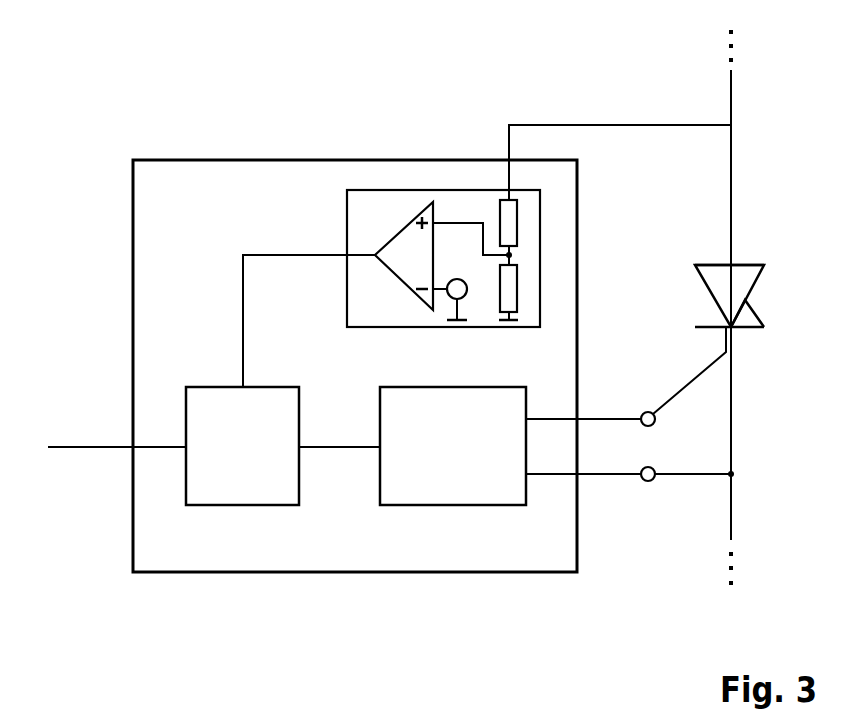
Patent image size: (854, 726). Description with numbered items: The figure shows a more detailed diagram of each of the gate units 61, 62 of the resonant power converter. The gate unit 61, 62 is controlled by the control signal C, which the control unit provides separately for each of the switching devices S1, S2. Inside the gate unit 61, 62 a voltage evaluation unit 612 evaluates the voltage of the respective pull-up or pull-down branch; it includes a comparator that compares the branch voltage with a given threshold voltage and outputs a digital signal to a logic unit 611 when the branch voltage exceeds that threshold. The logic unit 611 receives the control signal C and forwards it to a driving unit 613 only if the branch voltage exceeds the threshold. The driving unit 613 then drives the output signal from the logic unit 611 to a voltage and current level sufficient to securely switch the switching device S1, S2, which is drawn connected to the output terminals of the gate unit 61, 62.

The gate unit 61 is at (355, 334).
The gate unit 62 is at (320, 160).
The logic unit 611 is at (242, 506).
The voltage evaluation unit 612 is at (450, 190).
The driving unit 613 is at (452, 506).
The control signal C is at (106, 447).
The switching device S1 is at (734, 319).
The switching device S2 is at (805, 250).